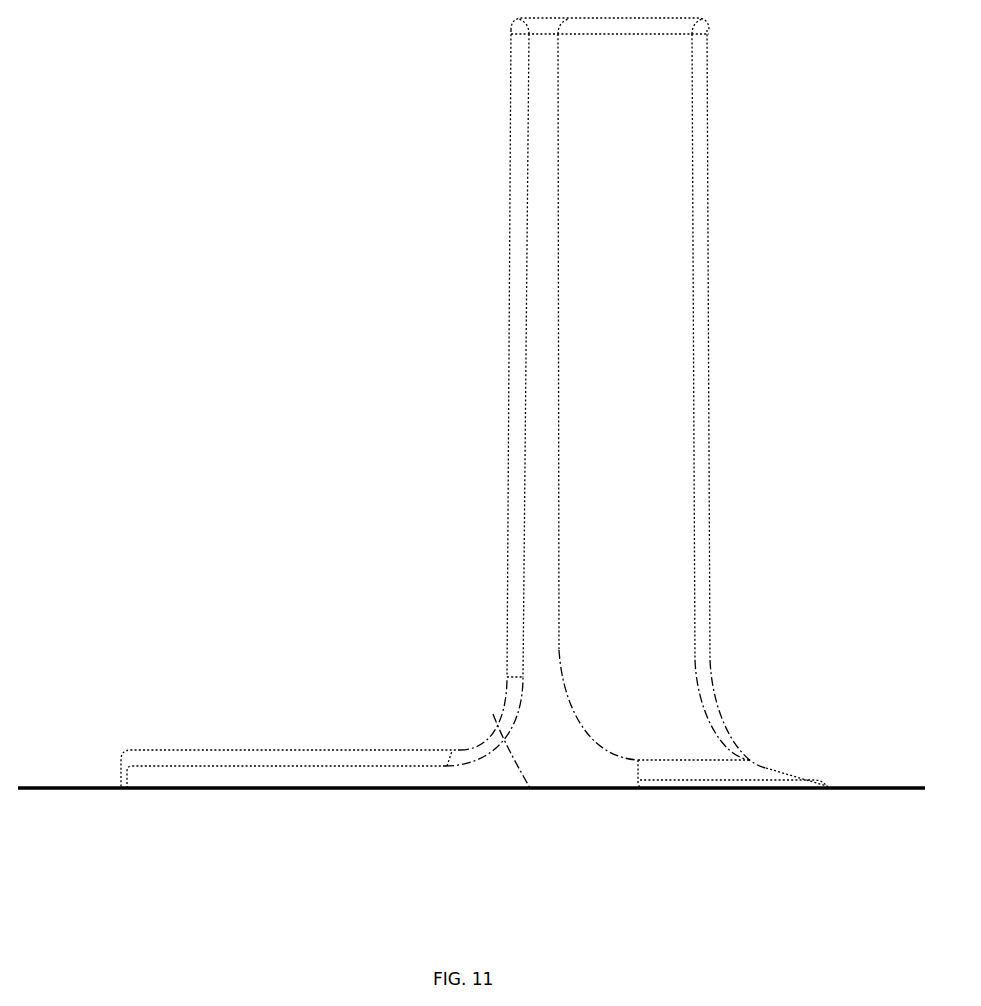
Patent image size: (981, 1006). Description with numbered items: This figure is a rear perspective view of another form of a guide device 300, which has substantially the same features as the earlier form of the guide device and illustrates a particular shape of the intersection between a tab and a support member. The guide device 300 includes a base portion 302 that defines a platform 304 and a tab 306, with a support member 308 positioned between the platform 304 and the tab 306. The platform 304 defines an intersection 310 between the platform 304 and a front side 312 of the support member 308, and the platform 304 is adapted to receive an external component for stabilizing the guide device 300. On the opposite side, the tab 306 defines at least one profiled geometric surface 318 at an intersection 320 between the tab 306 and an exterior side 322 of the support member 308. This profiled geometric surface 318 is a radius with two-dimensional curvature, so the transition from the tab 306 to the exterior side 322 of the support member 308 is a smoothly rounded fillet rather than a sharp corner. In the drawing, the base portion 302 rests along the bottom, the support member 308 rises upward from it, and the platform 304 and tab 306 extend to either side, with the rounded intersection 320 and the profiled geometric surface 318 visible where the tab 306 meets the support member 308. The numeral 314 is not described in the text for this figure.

The guide device 300 is at (272, 107).
The base portion 302 is at (495, 800).
The platform 304 is at (188, 778).
The tab 306 is at (613, 770).
The support member 308 is at (655, 120).
The intersection 310 is at (472, 728).
The front side 312 is at (512, 312).
The left flange upper layer 314 is at (255, 750).
The profiled geometric surface 318 is at (670, 747).
The intersection 320 is at (697, 727).
The exterior side 322 is at (653, 288).